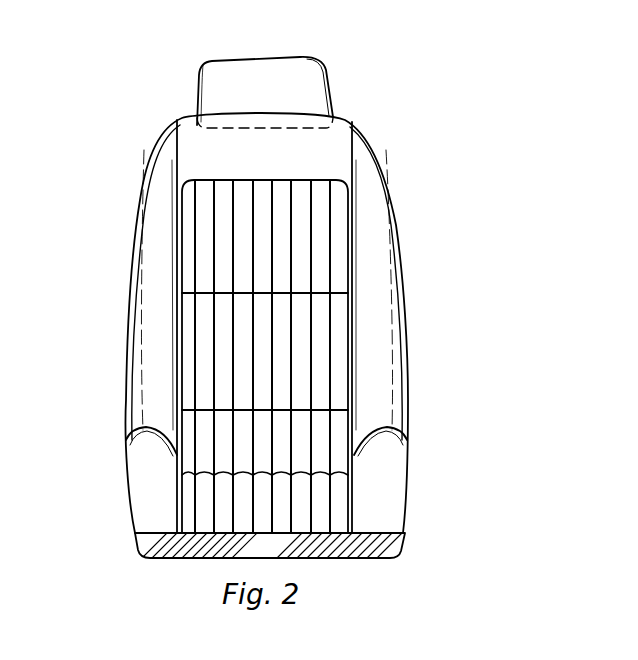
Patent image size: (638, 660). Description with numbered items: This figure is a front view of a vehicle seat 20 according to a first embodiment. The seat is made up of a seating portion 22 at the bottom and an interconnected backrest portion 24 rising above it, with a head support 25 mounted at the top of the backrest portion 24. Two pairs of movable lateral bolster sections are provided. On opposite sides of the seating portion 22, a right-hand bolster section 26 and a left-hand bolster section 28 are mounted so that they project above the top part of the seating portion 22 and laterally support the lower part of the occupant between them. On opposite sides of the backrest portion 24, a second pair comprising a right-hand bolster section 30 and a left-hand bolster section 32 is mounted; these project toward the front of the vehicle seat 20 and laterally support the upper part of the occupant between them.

The vehicle seat 20 is at (527, 118).
The seating portion 22 is at (315, 500).
The backrest portion 24 is at (303, 238).
The headrest 25 is at (308, 58).
The right-hand bolster section 26 is at (129, 447).
The left-hand bolster section 28 is at (389, 467).
The right-hand bolster section 30 is at (136, 220).
The left-hand bolster section 32 is at (403, 265).